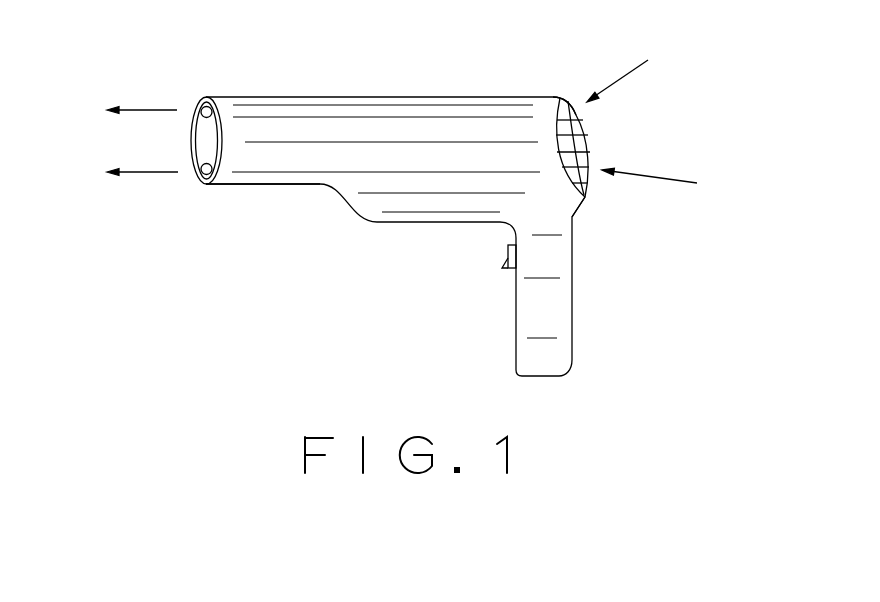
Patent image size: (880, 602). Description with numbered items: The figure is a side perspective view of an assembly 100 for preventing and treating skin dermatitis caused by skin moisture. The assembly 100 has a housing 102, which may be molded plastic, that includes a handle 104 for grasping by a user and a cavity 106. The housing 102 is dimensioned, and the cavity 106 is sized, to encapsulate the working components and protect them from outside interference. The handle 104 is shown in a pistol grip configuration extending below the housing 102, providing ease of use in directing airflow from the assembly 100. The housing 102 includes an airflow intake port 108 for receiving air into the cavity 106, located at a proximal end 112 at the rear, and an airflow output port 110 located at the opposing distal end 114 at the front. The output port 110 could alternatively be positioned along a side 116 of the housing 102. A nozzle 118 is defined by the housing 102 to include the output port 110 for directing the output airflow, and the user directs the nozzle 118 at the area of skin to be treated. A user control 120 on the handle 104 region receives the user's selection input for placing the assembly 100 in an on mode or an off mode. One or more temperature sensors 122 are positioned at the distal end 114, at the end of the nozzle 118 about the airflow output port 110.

The assembly 100 is at (447, 37).
The housing 102 is at (475, 97).
The handle 104 is at (573, 347).
The cavity 106 is at (598, 148).
The airflow intake port 108 is at (587, 120).
The airflow output port 110 is at (202, 186).
The proximal end 112 is at (593, 200).
The distal end 114 is at (214, 197).
The side 116 is at (450, 195).
The nozzle 118 is at (295, 123).
The user control 120 is at (505, 270).
The temperature sensors 122 is at (197, 108).